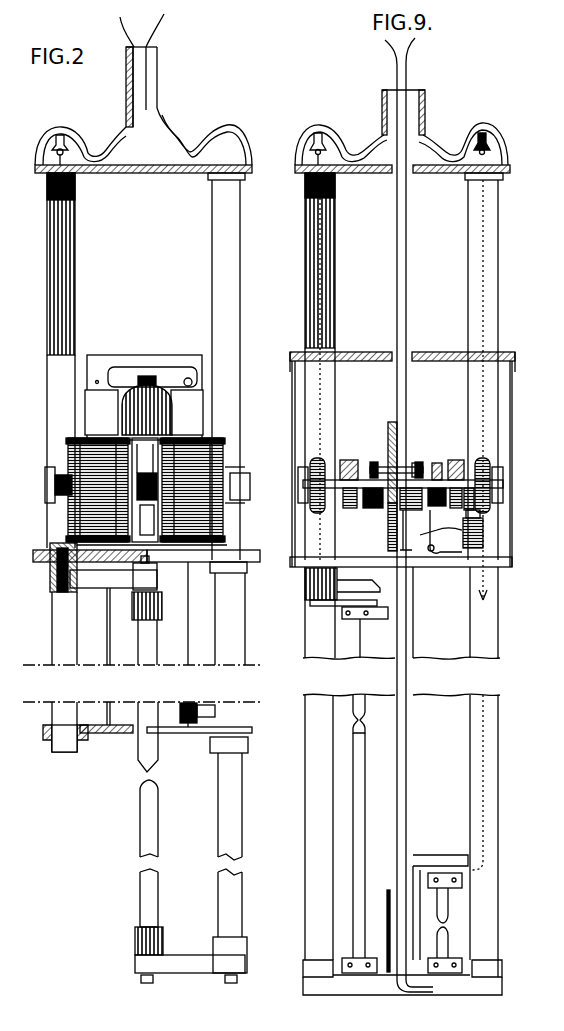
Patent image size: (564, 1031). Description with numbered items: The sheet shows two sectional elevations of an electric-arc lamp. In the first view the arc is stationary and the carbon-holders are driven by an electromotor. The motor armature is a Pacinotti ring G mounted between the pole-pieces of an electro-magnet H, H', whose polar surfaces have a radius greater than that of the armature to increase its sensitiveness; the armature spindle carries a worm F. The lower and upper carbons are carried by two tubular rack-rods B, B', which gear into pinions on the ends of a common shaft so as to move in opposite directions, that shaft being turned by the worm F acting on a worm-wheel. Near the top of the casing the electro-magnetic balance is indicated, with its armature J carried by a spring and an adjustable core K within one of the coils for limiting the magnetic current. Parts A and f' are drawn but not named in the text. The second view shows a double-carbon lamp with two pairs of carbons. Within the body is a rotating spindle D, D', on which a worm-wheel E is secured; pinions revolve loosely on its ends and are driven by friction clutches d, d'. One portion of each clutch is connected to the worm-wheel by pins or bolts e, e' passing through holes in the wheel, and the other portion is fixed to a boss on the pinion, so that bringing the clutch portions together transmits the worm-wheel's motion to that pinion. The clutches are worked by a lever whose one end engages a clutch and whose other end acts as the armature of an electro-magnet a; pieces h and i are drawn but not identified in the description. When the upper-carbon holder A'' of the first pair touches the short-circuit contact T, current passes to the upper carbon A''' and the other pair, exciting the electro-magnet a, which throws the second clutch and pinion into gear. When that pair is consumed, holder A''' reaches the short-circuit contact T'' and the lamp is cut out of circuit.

In FIG. 2, the adjustable core K is at (61, 360).
In FIG. 9, the adjustable core K is at (315, 150).
In FIG. 2, the Pacinotti ring G is at (122, 420).
In FIG. 2, the electro-magnet pole-piece H is at (80, 490).
In FIG. 2, the electro-magnet pole-piece H' is at (211, 490).
In FIG. 2, the worm F is at (145, 490).
In FIG. 2, the tubular rack-rod B' is at (103, 580).
In FIG. 2, the contact f' is at (188, 711).
In FIG. 2, the plunger rod A is at (155, 814).
In FIG. 2, the tubular rack-rod B is at (234, 837).
In FIG. 9, the armature J is at (410, 153).
In FIG. 9, the shaft end D is at (298, 485).
In FIG. 9, the shaft end D' is at (503, 485).
In FIG. 9, the clutch d is at (349, 475).
In FIG. 9, the clutch d' is at (456, 475).
In FIG. 9, the worm-wheel E is at (382, 462).
In FIG. 9, the pin e is at (386, 527).
In FIG. 9, the pin e' is at (396, 460).
In FIG. 9, the lever h is at (407, 530).
In FIG. 9, the lever arm i is at (445, 531).
In FIG. 9, the electro-magnet a is at (483, 525).
In FIG. 9, the upper-carbon holder A''' is at (346, 613).
In FIG. 9, the upper-carbon holder A'' is at (442, 907).
In FIG. 9, the short-circuit contact T is at (435, 923).
In FIG. 9, the short-circuit contact T'' is at (379, 931).